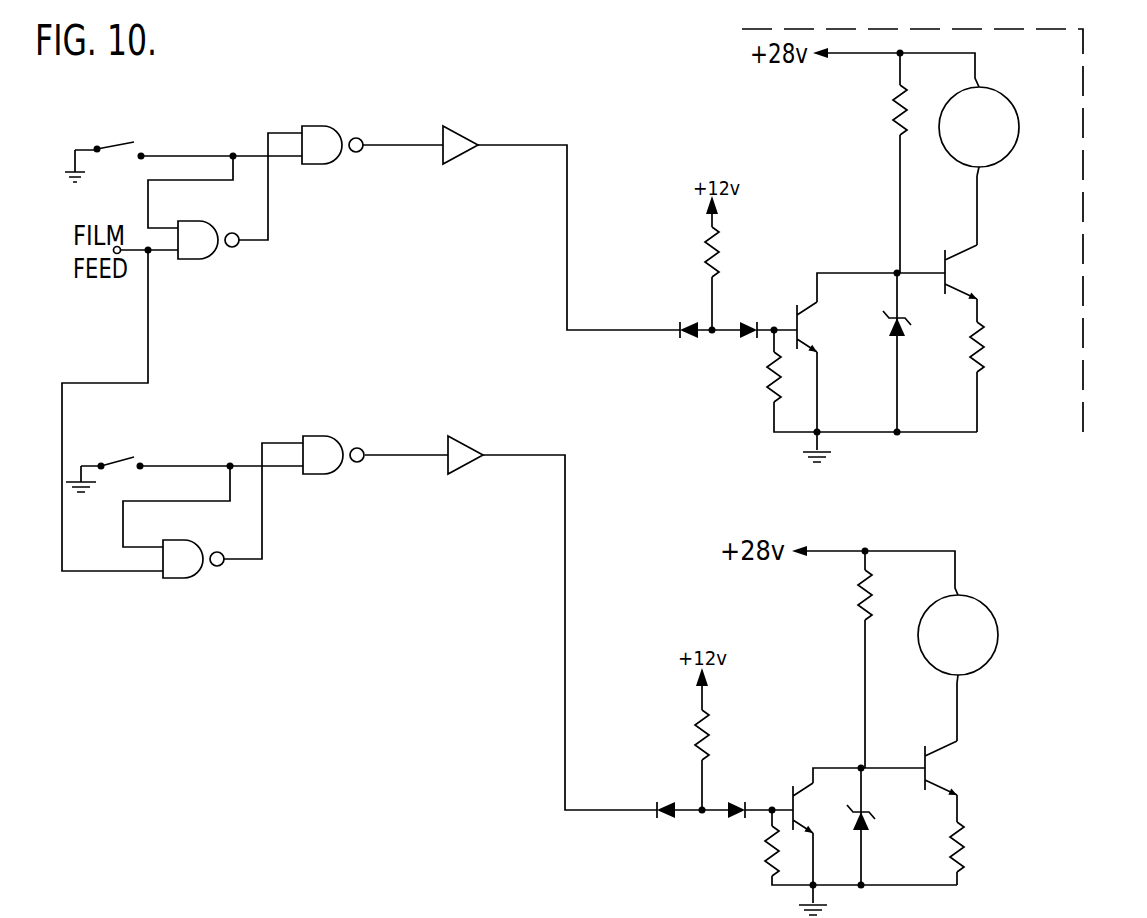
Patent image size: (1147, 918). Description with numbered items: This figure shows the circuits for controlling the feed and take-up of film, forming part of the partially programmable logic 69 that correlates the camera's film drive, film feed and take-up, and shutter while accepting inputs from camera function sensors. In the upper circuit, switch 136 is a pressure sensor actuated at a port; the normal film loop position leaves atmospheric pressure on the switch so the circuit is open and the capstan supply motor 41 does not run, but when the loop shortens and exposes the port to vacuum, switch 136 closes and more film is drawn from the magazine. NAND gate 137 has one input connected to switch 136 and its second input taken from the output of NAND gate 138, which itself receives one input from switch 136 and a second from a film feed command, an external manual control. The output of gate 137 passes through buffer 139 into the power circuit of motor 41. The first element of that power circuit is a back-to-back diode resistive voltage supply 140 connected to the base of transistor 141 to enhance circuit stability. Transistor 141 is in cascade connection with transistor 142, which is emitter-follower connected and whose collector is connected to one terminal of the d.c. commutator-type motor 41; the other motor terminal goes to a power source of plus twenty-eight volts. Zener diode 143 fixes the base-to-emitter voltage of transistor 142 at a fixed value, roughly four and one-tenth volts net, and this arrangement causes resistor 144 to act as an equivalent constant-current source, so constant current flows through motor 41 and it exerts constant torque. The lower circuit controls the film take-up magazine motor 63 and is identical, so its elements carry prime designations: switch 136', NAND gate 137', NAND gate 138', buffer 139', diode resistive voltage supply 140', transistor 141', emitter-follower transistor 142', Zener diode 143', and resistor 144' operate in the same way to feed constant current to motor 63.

The switch 136 is at (99, 147).
The NAND gate 137 is at (332, 133).
The NAND gate 138 is at (208, 227).
The buffer 139 is at (473, 134).
The back-to-back diode resistive voltage supply 140 is at (736, 265).
The transistor 141 is at (789, 315).
The transistor 142 is at (972, 272).
The Zener diode 143 is at (911, 352).
The resistor 144 is at (1000, 347).
The capstan supply motor 41 is at (1019, 116).
The logic 69 is at (1083, 175).
The switch 136' is at (103, 460).
The NAND gate 137' is at (335, 442).
The NAND gate 138' is at (199, 547).
The buffer 139' is at (480, 444).
The back-to-back diode resistive voltage supply 140' is at (731, 741).
The transistor 141' is at (782, 800).
The transistor 142' is at (958, 768).
The Zener diode 143' is at (882, 826).
The resistor 144' is at (983, 847).
The film take-up magazine motor 63 is at (997, 633).